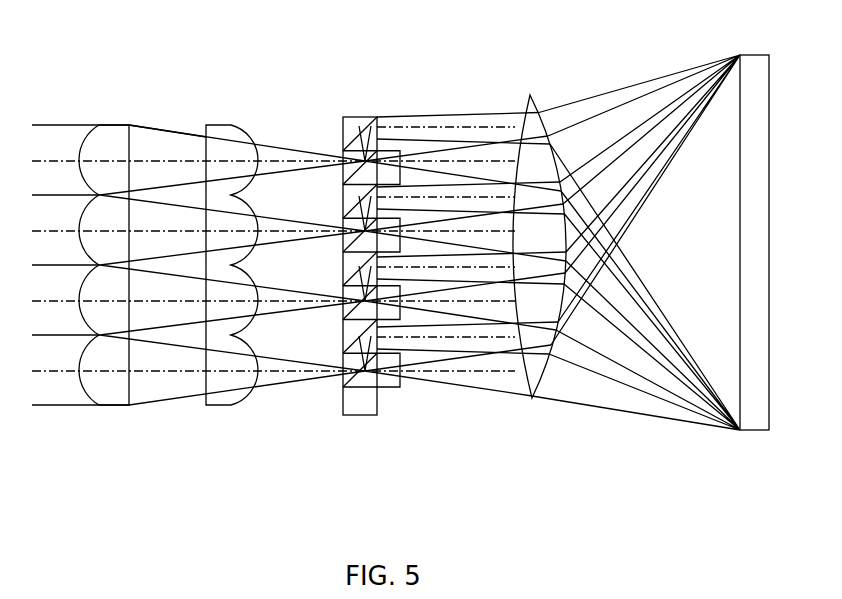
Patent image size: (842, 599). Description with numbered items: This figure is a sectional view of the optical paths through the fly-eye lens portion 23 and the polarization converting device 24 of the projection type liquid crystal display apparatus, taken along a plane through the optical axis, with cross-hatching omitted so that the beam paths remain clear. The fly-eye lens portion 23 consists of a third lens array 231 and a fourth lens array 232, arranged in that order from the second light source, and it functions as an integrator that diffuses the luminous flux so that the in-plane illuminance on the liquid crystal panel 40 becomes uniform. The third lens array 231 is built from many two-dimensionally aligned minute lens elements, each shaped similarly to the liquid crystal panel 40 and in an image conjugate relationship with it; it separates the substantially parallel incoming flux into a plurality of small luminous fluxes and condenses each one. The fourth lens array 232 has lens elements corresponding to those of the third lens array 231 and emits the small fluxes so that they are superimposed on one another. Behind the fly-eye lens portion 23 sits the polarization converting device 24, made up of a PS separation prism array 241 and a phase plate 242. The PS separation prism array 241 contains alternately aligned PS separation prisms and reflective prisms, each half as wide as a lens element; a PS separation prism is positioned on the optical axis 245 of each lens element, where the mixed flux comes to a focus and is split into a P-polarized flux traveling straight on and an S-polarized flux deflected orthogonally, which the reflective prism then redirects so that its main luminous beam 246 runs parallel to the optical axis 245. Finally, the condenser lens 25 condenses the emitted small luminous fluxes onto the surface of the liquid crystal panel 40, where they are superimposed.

The fly-eye lens portion 23 is at (166, 313).
The third lens array 231 is at (100, 397).
The fourth lens array 232 is at (238, 288).
The polarization converting device 24 is at (356, 218).
The PS separation prism array 241 is at (359, 117).
The phase plate 242 is at (387, 226).
The optical axis 245 is at (265, 150).
The main luminous beam 246 is at (452, 130).
The condenser lens 25 is at (527, 395).
The liquid crystal panel 40 is at (753, 420).